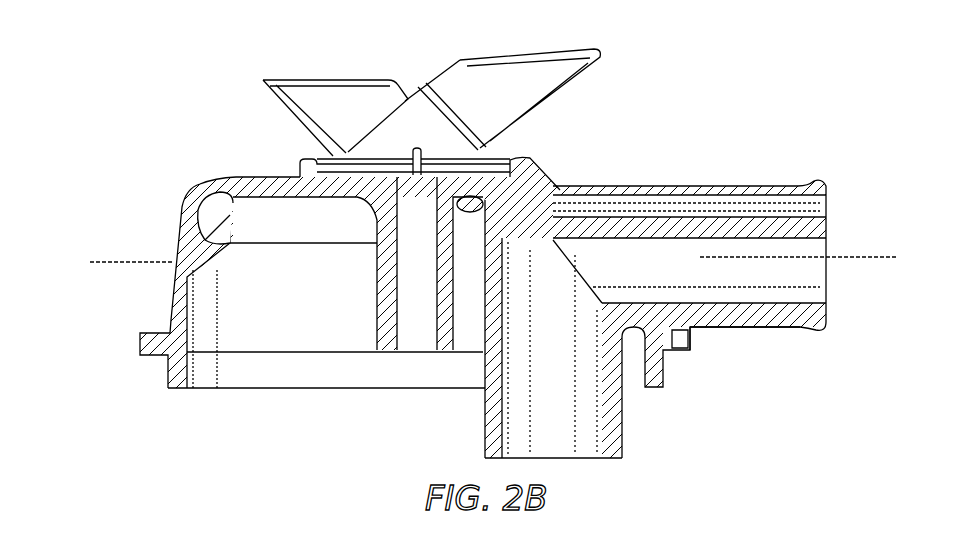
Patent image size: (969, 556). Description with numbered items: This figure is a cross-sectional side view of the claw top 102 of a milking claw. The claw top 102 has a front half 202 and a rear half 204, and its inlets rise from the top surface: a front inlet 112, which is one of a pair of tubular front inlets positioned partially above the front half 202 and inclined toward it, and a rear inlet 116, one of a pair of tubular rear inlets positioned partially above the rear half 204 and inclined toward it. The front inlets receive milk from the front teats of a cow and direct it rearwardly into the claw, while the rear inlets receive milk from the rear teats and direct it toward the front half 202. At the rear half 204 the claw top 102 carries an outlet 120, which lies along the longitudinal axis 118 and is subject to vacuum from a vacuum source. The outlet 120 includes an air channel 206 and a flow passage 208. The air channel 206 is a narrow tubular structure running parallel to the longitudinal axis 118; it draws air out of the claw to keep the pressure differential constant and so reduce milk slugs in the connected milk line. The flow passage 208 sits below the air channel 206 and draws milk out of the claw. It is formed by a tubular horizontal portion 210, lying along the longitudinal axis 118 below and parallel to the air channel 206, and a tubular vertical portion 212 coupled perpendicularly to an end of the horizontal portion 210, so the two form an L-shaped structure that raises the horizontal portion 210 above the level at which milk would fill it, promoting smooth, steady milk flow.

The claw top 102 is at (690, 90).
The front inlet 112 is at (305, 80).
The rear inlet 116 is at (517, 53).
The longitudinal axis 118 is at (127, 262).
The outlet 120 is at (752, 186).
The front half 202 is at (184, 194).
The rear half 204 is at (543, 181).
The air channel 206 is at (643, 210).
The flow passage 208 is at (742, 324).
The horizontal portion 210 is at (778, 272).
The vertical portion 212 is at (553, 407).